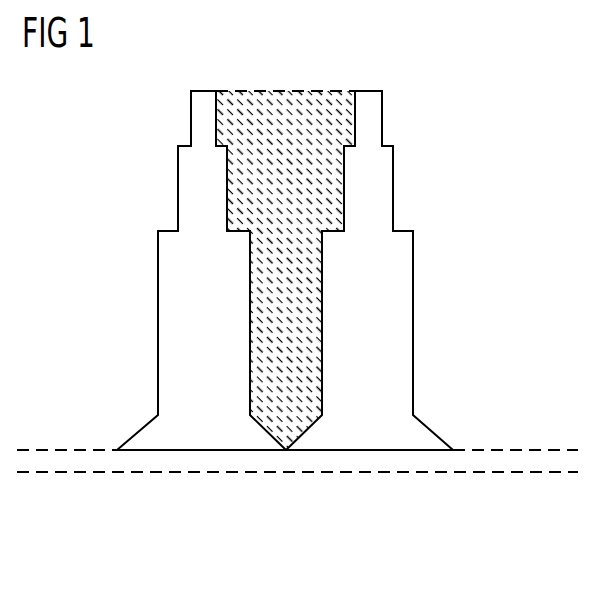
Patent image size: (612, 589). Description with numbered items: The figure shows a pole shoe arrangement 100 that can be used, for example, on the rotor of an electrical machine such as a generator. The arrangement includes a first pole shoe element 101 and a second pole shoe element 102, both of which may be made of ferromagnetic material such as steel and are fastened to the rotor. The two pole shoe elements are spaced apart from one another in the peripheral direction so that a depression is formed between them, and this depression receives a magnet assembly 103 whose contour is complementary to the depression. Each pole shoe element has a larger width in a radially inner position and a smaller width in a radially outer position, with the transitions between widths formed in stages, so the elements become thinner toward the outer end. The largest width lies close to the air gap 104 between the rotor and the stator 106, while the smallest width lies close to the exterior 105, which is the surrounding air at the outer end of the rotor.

The pole shoe arrangement 100 is at (297, 292).
The first pole shoe element 101 is at (403, 322).
The second pole shoe element 102 is at (168, 331).
The magnet assembly 103 is at (287, 103).
The air gap 104 is at (476, 465).
The exterior 105 is at (224, 66).
The stator 106 is at (298, 498).